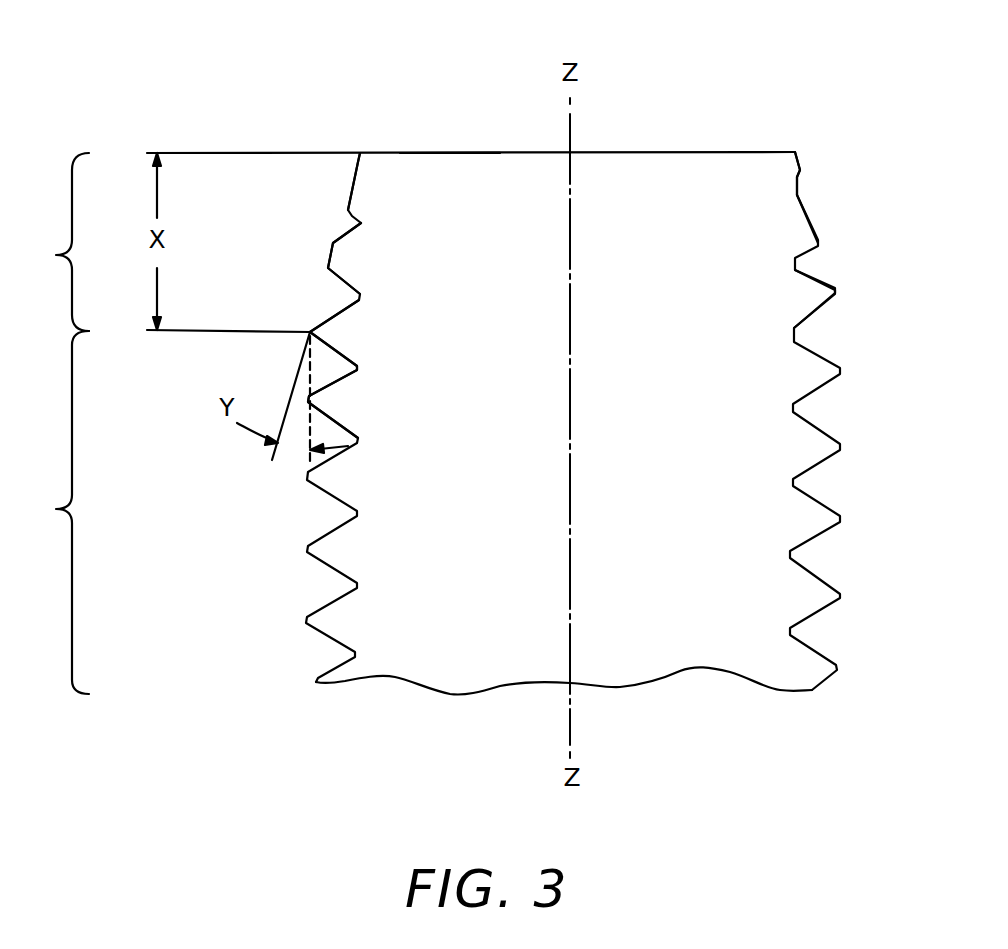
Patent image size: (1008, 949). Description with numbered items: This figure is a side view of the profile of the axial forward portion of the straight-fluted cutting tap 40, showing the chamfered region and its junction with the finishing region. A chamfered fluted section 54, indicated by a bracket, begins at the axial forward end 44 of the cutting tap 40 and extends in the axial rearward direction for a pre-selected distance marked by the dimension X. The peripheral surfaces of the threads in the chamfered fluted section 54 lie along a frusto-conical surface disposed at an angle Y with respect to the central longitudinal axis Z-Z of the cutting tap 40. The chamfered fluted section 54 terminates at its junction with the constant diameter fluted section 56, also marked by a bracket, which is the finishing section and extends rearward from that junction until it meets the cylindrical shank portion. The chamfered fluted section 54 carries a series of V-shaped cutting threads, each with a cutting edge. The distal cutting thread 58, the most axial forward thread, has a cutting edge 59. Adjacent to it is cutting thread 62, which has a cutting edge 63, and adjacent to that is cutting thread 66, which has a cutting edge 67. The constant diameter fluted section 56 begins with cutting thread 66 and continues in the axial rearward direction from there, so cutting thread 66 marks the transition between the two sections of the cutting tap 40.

The straight-fluted cutting tap 40 is at (270, 93).
The axial forward end 44 is at (447, 153).
The chamfered fluted section 54 is at (53, 242).
The constant diameter fluted section 56 is at (53, 512).
The distal cutting thread 58 is at (362, 186).
The cutting edge 59 is at (803, 168).
The cutting thread 62 is at (345, 253).
The cutting edge 63 is at (328, 268).
The cutting thread 66 is at (333, 334).
The cutting edge 67 is at (310, 332).